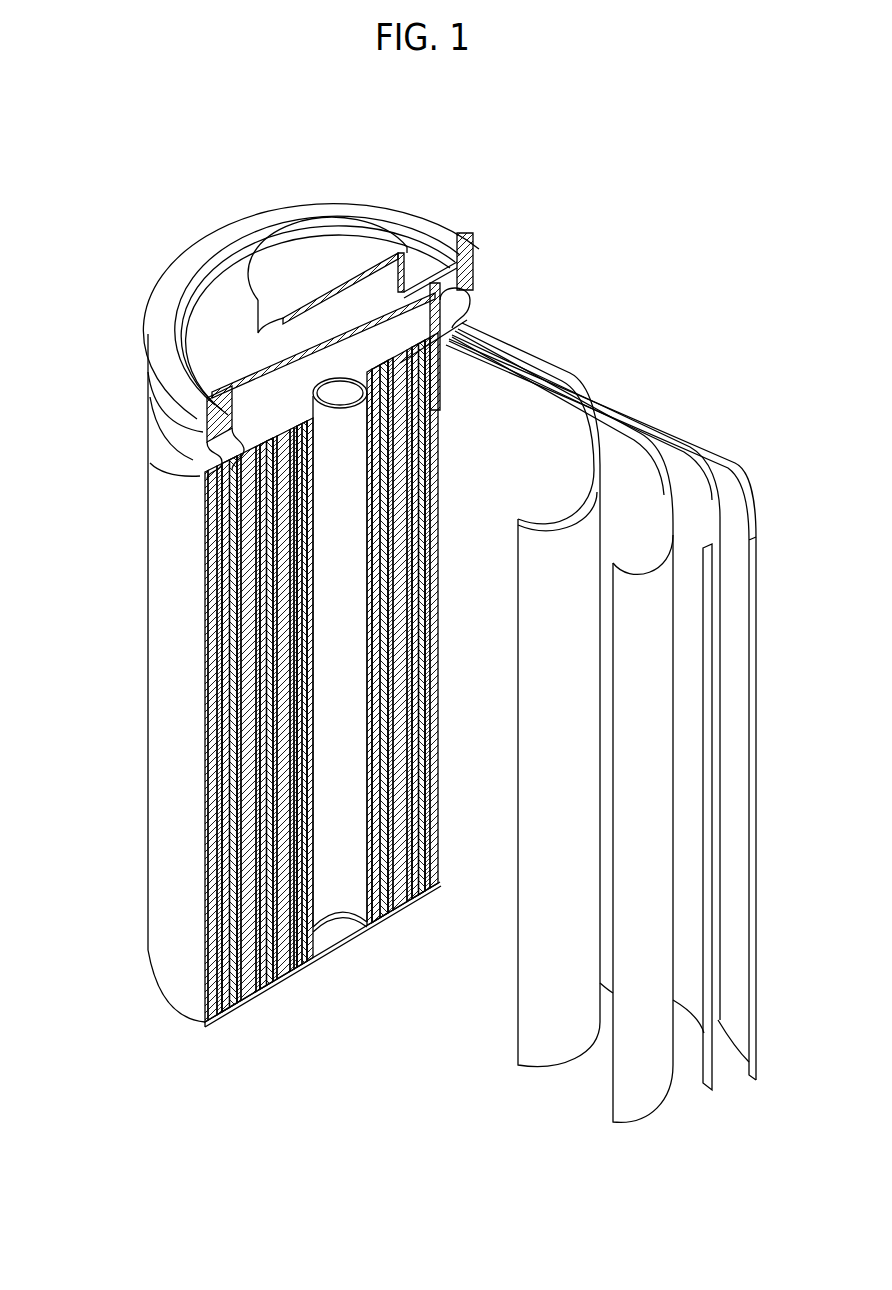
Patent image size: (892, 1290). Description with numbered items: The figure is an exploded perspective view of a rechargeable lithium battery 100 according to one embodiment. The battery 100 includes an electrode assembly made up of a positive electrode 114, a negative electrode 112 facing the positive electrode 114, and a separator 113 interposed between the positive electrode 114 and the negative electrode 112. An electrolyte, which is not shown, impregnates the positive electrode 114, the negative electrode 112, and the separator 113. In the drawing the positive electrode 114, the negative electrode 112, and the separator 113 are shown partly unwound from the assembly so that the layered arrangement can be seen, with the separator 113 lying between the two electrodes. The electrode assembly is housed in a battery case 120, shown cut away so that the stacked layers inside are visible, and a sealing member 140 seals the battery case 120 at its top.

The rechargeable lithium battery 100 is at (533, 205).
The negative electrode 112 is at (723, 477).
The separator 113 is at (541, 398).
The positive electrode 114 is at (610, 437).
The battery case 120 is at (148, 563).
The sealing member 140 is at (313, 262).